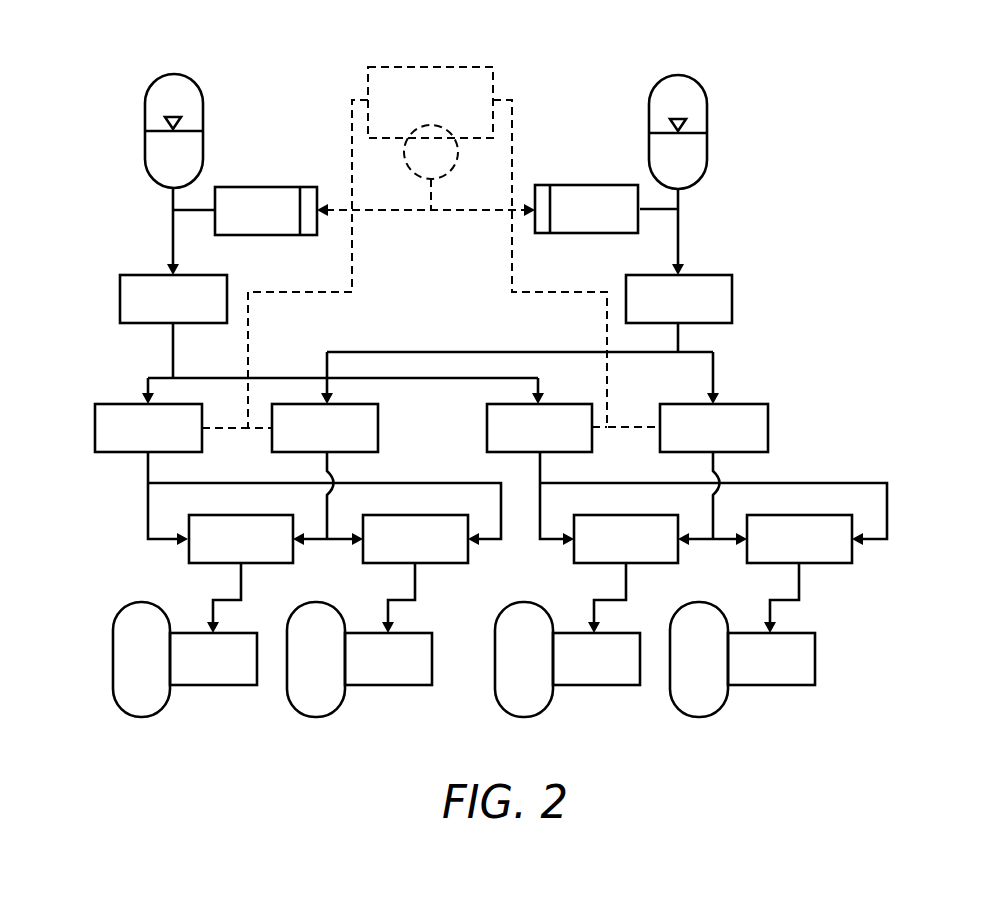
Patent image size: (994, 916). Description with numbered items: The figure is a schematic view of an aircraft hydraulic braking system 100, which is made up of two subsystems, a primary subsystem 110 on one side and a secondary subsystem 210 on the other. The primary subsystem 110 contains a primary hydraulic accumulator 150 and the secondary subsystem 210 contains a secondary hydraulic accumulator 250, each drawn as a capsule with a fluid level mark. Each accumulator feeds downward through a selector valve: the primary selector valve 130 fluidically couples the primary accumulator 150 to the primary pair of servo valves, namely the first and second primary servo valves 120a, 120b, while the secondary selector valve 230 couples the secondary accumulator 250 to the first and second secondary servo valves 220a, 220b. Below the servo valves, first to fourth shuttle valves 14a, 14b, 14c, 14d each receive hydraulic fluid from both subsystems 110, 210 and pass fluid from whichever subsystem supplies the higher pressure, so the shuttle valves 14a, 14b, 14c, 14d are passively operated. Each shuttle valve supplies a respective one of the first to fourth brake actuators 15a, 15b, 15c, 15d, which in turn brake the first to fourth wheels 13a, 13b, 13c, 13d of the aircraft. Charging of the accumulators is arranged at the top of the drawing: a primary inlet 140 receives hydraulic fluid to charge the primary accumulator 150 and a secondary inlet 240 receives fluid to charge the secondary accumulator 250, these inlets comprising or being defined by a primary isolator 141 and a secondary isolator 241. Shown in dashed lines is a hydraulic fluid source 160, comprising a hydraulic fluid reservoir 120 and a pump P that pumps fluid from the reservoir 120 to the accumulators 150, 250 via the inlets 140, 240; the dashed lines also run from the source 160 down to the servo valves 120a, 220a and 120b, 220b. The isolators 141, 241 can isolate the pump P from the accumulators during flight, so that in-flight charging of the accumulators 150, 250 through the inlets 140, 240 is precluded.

The aircraft hydraulic braking system 100 is at (281, 110).
The primary subsystem 110 is at (133, 243).
The hydraulic fluid reservoir 120 is at (359, 58).
The first primary servo valve 120a is at (298, 474).
The second primary servo valve 120b is at (687, 474).
The primary selector valve 130 is at (173, 299).
The primary inlet 140 is at (268, 234).
The primary isolator 141 is at (310, 230).
The primary hydraulic accumulator 150 is at (146, 68).
The hydraulic fluid source 160 is at (431, 214).
The secondary subsystem 210 is at (731, 241).
The first secondary servo valve 220a is at (325, 474).
The second secondary servo valve 220b is at (714, 474).
The secondary selector valve 230 is at (679, 299).
The secondary inlet 240 is at (585, 229).
The secondary isolator 241 is at (545, 223).
The secondary hydraulic accumulator 250 is at (651, 65).
The first shuttle valve 14a is at (241, 574).
The second shuttle valve 14b is at (415, 574).
The third shuttle valve 14c is at (626, 574).
The fourth shuttle valve 14d is at (799, 574).
The first brake actuator 15a is at (213, 659).
The second brake actuator 15b is at (388, 659).
The third brake actuator 15c is at (596, 659).
The fourth brake actuator 15d is at (771, 659).
The first wheel 13a is at (178, 718).
The second wheel 13b is at (353, 718).
The third wheel 13c is at (570, 718).
The fourth wheel 13d is at (745, 718).